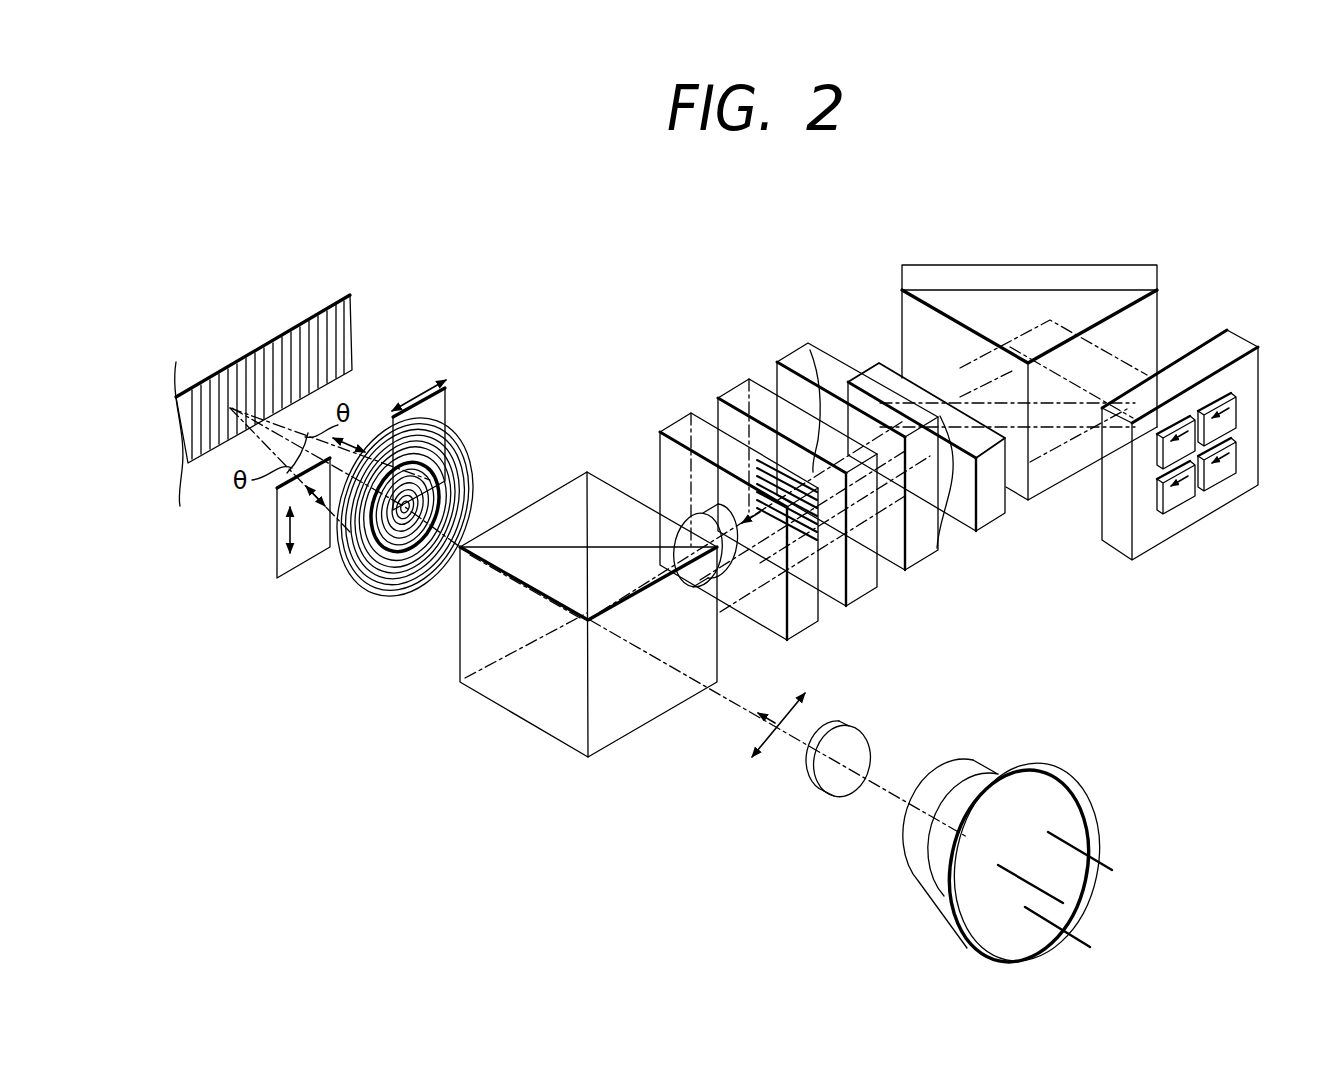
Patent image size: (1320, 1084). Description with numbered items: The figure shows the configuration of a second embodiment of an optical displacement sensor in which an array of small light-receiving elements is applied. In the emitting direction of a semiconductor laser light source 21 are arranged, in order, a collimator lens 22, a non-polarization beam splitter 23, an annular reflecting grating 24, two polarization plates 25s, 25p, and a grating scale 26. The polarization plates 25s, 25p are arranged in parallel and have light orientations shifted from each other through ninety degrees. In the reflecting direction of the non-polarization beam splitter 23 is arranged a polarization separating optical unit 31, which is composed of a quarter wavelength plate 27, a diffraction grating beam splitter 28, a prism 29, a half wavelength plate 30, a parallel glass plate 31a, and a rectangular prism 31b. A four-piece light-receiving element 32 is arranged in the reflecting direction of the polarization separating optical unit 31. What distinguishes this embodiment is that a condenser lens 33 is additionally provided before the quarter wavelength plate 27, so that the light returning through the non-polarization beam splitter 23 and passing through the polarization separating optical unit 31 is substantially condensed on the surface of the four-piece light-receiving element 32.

The semiconductor laser light source 21 is at (1060, 777).
The collimator lens 22 is at (835, 797).
The non-polarization beam splitter 23 is at (510, 713).
The annular reflecting grating 24 is at (472, 467).
The polarization plate 25s is at (273, 533).
The polarization plate 25p is at (447, 405).
The grating scale 26 is at (255, 352).
The quarter wavelength plate 27 is at (680, 417).
The diffraction grating beam splitter 28 is at (740, 387).
The prism 29 is at (797, 346).
The half wavelength plate 30 is at (990, 515).
The polarization separating optical unit 31 is at (1018, 339).
The parallel glass plate 31a is at (1097, 275).
The rectangular prism 31b is at (967, 303).
The four-piece light-receiving element 32 is at (1180, 522).
The condenser lens 33 is at (693, 517).